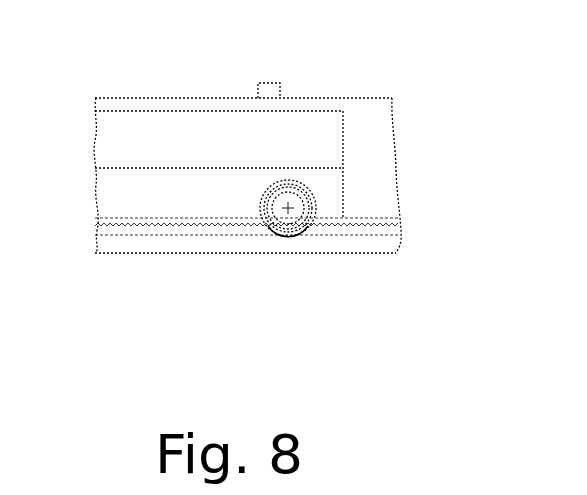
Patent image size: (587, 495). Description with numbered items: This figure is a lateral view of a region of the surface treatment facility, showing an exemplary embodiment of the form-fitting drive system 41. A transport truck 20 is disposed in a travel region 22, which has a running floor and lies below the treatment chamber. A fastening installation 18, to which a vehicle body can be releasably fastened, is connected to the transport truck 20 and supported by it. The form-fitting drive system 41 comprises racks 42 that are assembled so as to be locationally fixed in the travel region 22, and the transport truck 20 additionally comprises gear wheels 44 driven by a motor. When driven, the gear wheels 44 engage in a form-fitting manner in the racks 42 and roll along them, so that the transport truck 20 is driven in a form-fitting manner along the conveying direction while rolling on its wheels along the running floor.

The fastening installation 18 is at (280, 92).
The transport truck 20 is at (187, 112).
The travel region 22 is at (384, 128).
The form-fitting drive system 41 is at (281, 186).
The rack 42 is at (187, 230).
The gear wheel 44 is at (286, 209).